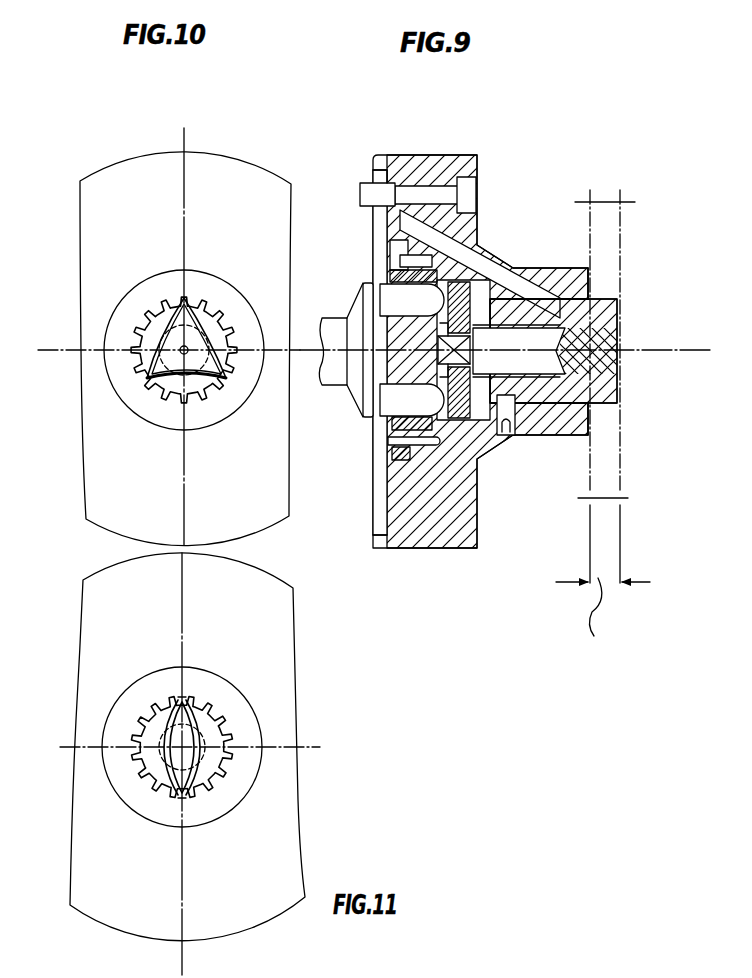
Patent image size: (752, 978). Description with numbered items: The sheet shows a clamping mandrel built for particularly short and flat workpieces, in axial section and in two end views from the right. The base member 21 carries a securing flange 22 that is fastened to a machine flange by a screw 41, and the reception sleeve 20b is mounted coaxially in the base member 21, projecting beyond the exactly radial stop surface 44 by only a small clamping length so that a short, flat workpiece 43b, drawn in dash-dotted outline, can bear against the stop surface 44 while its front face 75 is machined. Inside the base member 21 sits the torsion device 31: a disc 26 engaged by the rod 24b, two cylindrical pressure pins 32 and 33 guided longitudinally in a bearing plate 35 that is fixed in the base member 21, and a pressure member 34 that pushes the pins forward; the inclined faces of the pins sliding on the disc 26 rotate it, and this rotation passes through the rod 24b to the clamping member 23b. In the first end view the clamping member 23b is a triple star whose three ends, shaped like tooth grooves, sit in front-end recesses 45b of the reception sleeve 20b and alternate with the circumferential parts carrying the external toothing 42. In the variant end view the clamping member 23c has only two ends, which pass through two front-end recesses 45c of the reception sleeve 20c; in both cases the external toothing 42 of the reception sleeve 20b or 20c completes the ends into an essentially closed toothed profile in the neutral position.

In FIG. 10, the reception sleeve 20b is at (215, 312).
In FIG. 9, the reception sleeve 20b is at (603, 390).
In FIG. 11, the reception sleeve 20c is at (233, 738).
In FIG. 10, the base member 21 is at (123, 197).
In FIG. 9, the base member 21 is at (466, 240).
In FIG. 11, the base member 21 is at (278, 620).
In FIG. 9, the securing flange 22 is at (468, 167).
In FIG. 10, the clamping member 23b is at (213, 342).
In FIG. 9, the clamping member 23b is at (605, 322).
In FIG. 11, the clamping member 23c is at (227, 722).
In FIG. 10, the rod 24b is at (224, 326).
In FIG. 9, the rod 24b is at (361, 280).
In FIG. 9, the disc 26 is at (503, 266).
In FIG. 9, the torsion device 31 is at (390, 253).
In FIG. 9, the pressure pin 32 is at (405, 300).
In FIG. 9, the pressure pin 33 is at (405, 402).
In FIG. 9, the pressure member 34 is at (334, 330).
In FIG. 9, the bearing plate 35 is at (388, 453).
In FIG. 9, the screw 41 is at (428, 192).
In FIG. 10, the external toothing 42 is at (147, 343).
In FIG. 11, the external toothing 42 is at (230, 758).
In FIG. 9, the workpiece 43b is at (608, 235).
In FIG. 10, the stop surface 44 is at (208, 293).
In FIG. 9, the stop surface 44 is at (594, 283).
In FIG. 11, the stop surface 44 is at (226, 695).
In FIG. 10, the front-end recesses 45b is at (175, 300).
In FIG. 11, the front-end recesses 45c is at (192, 694).
In FIG. 9, the front face 75 is at (625, 470).